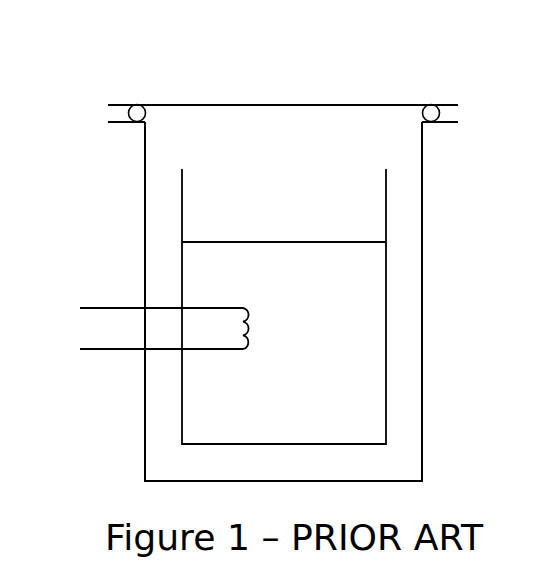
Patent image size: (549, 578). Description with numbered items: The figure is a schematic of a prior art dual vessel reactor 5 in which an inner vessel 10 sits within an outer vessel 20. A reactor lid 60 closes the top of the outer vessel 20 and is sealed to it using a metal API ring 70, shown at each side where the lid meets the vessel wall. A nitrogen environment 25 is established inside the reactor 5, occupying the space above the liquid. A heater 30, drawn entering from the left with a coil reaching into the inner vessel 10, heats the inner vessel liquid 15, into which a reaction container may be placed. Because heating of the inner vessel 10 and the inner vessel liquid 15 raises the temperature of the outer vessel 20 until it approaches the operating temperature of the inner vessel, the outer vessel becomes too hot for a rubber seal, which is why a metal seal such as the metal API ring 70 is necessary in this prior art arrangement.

The reactor 5 is at (157, 63).
The inner vessel 10 is at (386, 333).
The inner vessel liquid 15 is at (303, 294).
The outer vessel 20 is at (422, 457).
The nitrogen environment 25 is at (303, 184).
The heater 30 is at (110, 305).
The reactor lid 60 is at (283, 104).
The metal API ring 70 is at (441, 114).